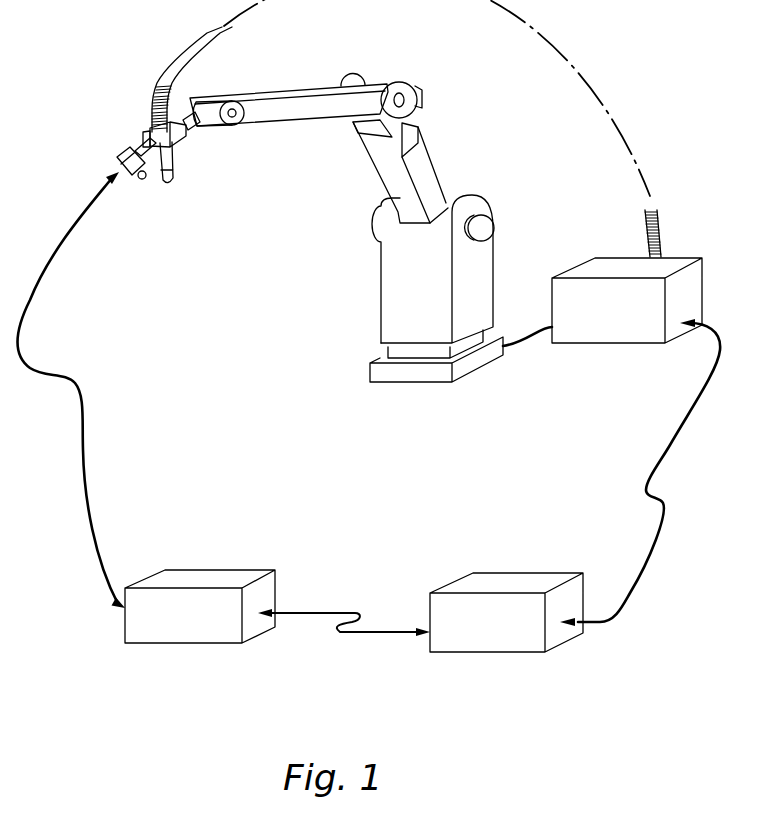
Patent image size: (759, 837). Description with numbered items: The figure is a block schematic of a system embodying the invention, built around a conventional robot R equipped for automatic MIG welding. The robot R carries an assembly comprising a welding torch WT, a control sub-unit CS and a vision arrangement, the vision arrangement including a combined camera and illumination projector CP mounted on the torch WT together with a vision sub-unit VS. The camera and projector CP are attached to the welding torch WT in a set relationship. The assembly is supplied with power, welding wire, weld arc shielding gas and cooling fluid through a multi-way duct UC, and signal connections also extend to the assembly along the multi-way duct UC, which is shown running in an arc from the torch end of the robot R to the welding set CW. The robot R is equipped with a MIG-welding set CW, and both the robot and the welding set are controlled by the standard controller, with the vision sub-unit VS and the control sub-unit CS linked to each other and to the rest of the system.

The multi-way duct UC is at (187, 58).
The combined camera and illumination projector CP is at (127, 152).
The torch WT is at (173, 172).
The robot R is at (500, 190).
The MIG-welding set CW is at (607, 267).
The vision sub-unit VS is at (212, 575).
The control sub-unit CS is at (498, 580).